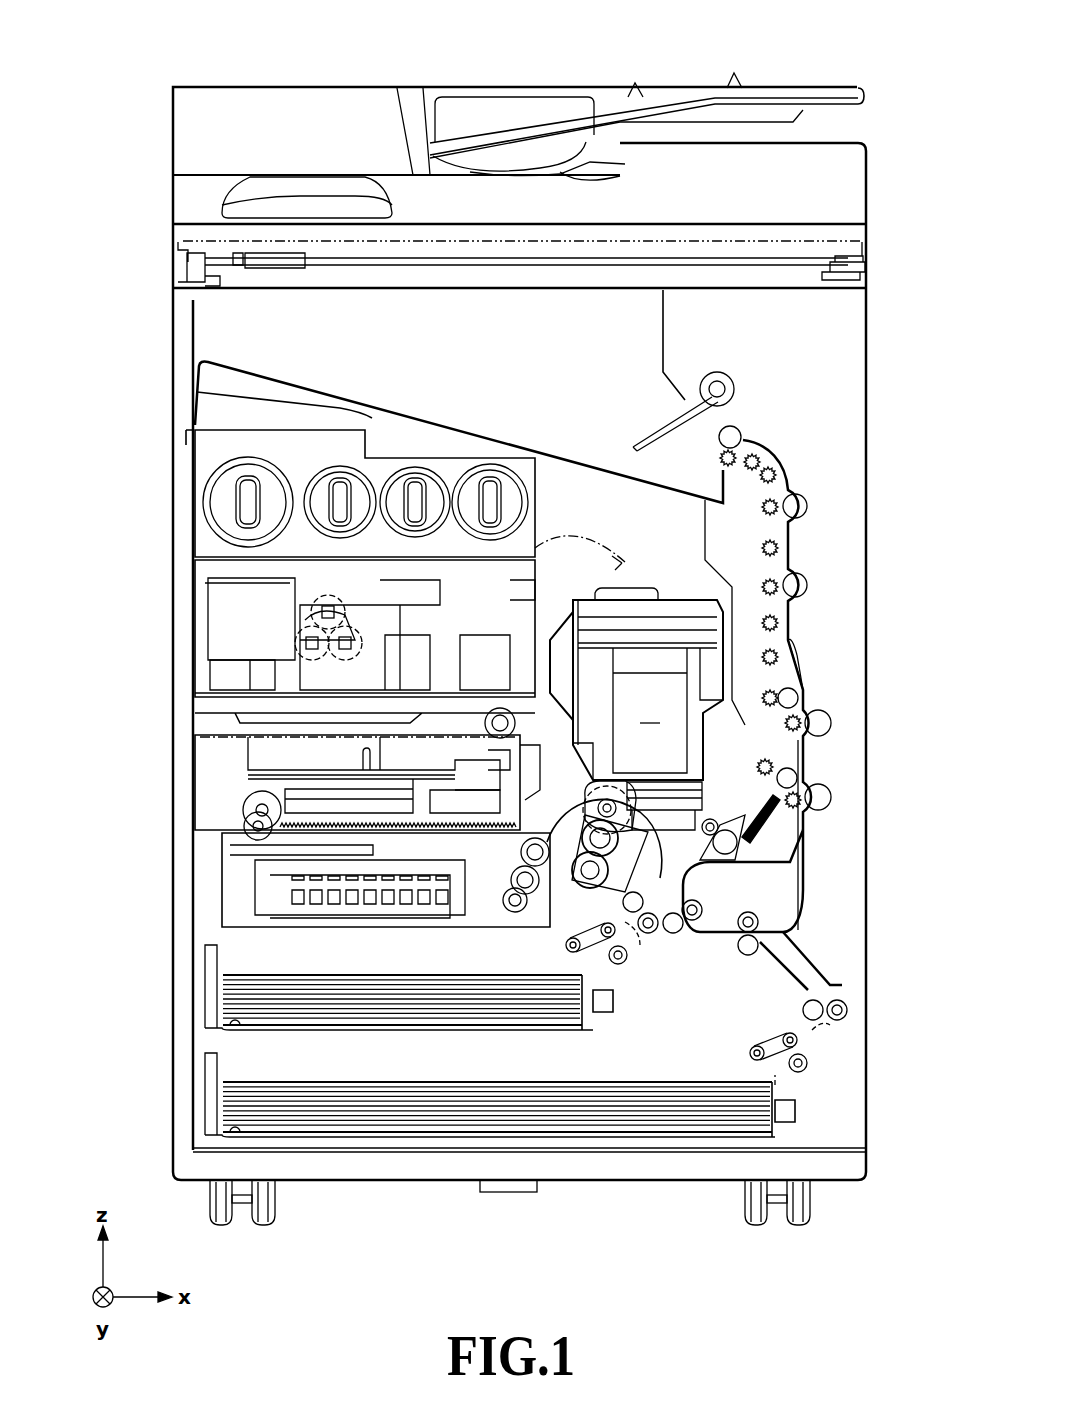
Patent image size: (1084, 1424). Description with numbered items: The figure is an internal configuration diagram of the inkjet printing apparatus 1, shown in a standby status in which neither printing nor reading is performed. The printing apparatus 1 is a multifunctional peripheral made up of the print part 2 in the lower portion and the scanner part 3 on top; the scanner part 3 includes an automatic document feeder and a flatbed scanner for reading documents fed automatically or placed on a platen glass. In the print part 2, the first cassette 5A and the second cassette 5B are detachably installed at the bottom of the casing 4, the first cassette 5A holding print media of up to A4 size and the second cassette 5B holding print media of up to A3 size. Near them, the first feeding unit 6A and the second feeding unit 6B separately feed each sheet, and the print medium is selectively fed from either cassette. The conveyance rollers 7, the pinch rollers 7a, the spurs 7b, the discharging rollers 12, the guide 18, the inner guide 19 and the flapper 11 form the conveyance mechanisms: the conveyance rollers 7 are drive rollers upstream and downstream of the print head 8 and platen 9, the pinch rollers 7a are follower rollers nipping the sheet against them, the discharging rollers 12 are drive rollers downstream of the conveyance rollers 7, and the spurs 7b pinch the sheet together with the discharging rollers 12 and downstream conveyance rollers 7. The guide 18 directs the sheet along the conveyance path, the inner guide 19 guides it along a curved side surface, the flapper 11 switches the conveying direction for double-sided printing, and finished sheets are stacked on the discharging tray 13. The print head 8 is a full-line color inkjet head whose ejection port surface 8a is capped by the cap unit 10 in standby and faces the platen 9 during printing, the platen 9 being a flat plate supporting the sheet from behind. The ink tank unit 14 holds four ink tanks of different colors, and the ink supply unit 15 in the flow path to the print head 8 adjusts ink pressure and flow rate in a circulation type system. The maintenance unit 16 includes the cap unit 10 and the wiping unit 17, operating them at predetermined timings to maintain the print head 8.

The inkjet printing apparatus 1 is at (812, 72).
The print part 2 is at (107, 292).
The scanner part 3 is at (107, 90).
The casing 4 is at (867, 378).
The first cassette 5A is at (210, 995).
The second cassette 5B is at (210, 1105).
The first feeding unit 6A is at (622, 958).
The second feeding unit 6B is at (802, 1058).
The conveyance rollers 7 is at (797, 507).
The pinch rollers 7a is at (748, 932).
The spurs 7b is at (754, 466).
The print head 8 is at (636, 684).
The ejection port surface 8a is at (680, 818).
The platen 9 is at (728, 844).
The cap unit 10 is at (768, 895).
The flapper 11 is at (798, 670).
The discharging rollers 12 is at (734, 441).
The discharging tray 13 is at (470, 432).
The ink tank unit 14 is at (202, 470).
The ink supply unit 15 is at (205, 645).
The maintenance unit 16 is at (222, 887).
The wiping unit 17 is at (222, 762).
The guide 18 is at (787, 548).
The inner guide 19 is at (806, 905).